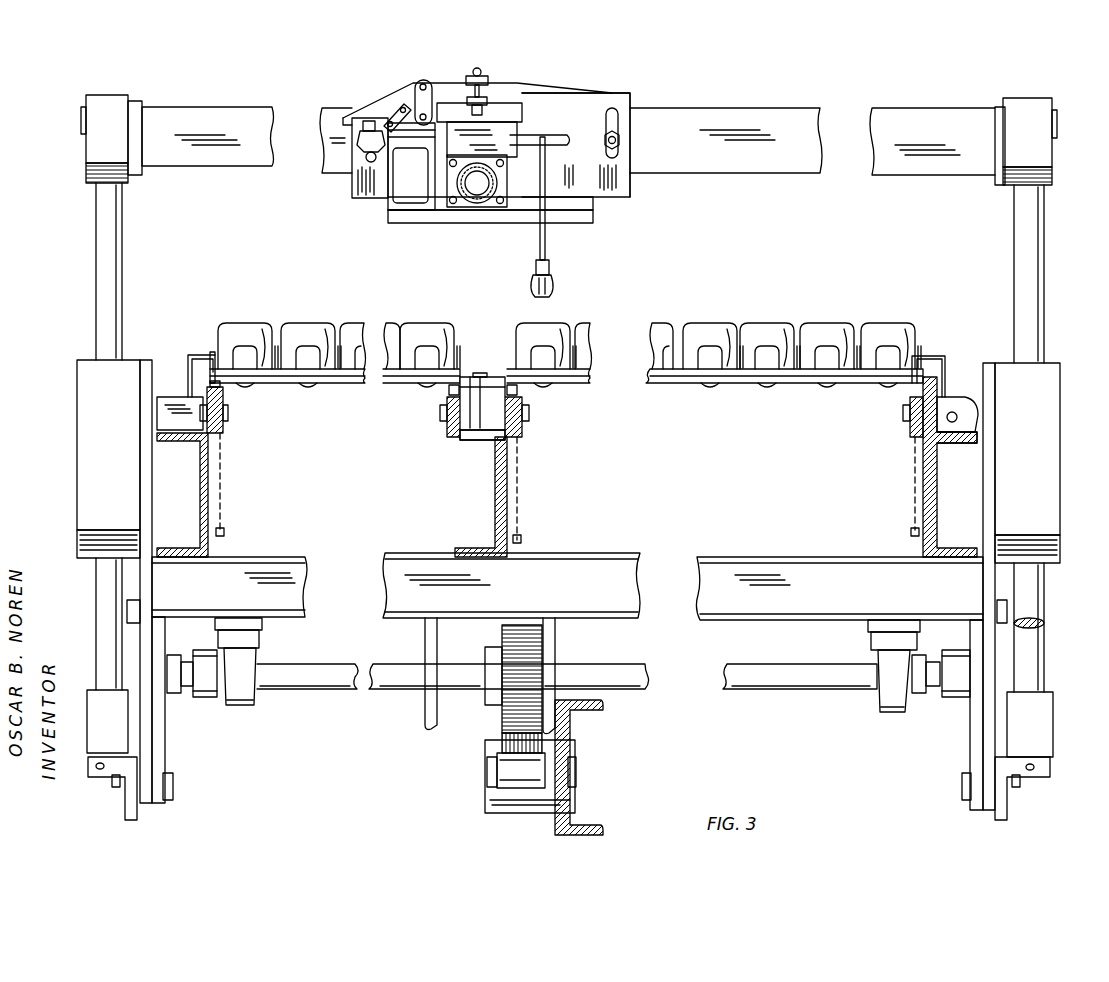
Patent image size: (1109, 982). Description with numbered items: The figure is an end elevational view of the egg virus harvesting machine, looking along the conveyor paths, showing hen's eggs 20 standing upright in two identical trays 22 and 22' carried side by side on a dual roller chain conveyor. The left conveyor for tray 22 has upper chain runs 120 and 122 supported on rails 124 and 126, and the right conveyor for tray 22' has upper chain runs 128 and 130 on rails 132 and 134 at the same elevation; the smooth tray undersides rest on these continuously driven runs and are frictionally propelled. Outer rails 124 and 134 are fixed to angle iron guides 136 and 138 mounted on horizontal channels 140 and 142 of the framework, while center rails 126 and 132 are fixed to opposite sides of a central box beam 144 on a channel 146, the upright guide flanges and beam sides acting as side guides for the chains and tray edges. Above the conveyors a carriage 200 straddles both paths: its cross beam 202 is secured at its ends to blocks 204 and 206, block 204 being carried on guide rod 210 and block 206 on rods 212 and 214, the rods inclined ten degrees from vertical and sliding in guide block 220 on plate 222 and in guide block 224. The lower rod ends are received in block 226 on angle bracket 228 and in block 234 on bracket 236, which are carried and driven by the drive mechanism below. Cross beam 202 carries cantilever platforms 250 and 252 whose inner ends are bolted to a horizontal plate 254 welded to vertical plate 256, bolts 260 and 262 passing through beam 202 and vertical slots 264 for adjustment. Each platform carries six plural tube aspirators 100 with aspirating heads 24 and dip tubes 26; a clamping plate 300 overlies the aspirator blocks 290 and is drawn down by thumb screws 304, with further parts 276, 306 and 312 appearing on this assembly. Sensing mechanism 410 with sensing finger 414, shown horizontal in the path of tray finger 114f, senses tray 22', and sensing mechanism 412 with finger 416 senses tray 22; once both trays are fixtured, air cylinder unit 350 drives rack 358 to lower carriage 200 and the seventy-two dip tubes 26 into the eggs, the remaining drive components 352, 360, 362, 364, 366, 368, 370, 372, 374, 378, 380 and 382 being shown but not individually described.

The hen's eggs 20 is at (218, 325).
The egg tray 22 is at (287, 399).
The egg tray 22' is at (784, 407).
The aspirating heads 24 is at (556, 270).
The dip tubes 26 is at (550, 242).
The plural tube aspirator 100 is at (540, 131).
The tray side finger 114f is at (918, 358).
The upper chain run 120 is at (225, 420).
The upper chain run 122 is at (447, 392).
The outer rail 124 is at (212, 450).
The center rail 126 is at (450, 437).
The upper chain run 128 is at (520, 392).
The upper chain run 130 is at (910, 402).
The center rail 132 is at (520, 437).
The outer rail 134 is at (912, 435).
The angle iron guide 136 is at (168, 413).
The angle iron guide 138 is at (975, 420).
The horizontal channel 140 is at (225, 533).
The horizontal channel 142 is at (920, 500).
The central box beam 144 is at (468, 440).
The channel 146 is at (508, 500).
The carriage 200 is at (72, 140).
The cross beam 202 is at (258, 107).
The block 204 is at (90, 95).
The block 206 is at (1052, 125).
The guide rod 210 is at (96, 252).
The guide rod 212 is at (1045, 660).
The guide rod 214 is at (1014, 240).
The guide block 220 is at (77, 421).
The plate 222 is at (141, 360).
The guide block 224 is at (1045, 370).
The block 226 is at (105, 695).
The angle bracket 228 is at (138, 818).
The block 234 is at (1052, 720).
The bracket 236 is at (1028, 785).
The cantilever platform 250 is at (395, 215).
The cantilever platform 252 is at (593, 218).
The horizontal plate 254 is at (593, 203).
The vertical plate 256 is at (608, 93).
The bolt 260 is at (362, 140).
The bolt 262 is at (622, 141).
The vertical slot 264 is at (620, 115).
The center block 276 is at (452, 210).
The aspirator block 290 is at (515, 192).
The clamping plate 300 is at (512, 108).
The thumb screw 304 is at (486, 100).
The cover 306 is at (392, 90).
The frame block 312 is at (358, 200).
The air cylinder unit 350 is at (485, 800).
The bracket 352 is at (565, 755).
The rack 358 is at (503, 740).
The motor block 360 is at (487, 775).
The nut 362 is at (578, 771).
The gear 364 is at (545, 645).
The drive shaft 366 is at (335, 690).
The hanger 368 is at (240, 712).
The hanger 370 is at (892, 712).
The shelf beam 372 is at (175, 638).
The bearing 374 is at (958, 648).
The bearing 378 is at (165, 733).
The side plate 380 is at (983, 738).
The bolt 382 is at (175, 785).
The sensing mechanism 410 is at (960, 391).
The sensing mechanism 412 is at (168, 397).
The sensing finger 414 is at (936, 372).
The sensing finger 416 is at (214, 357).